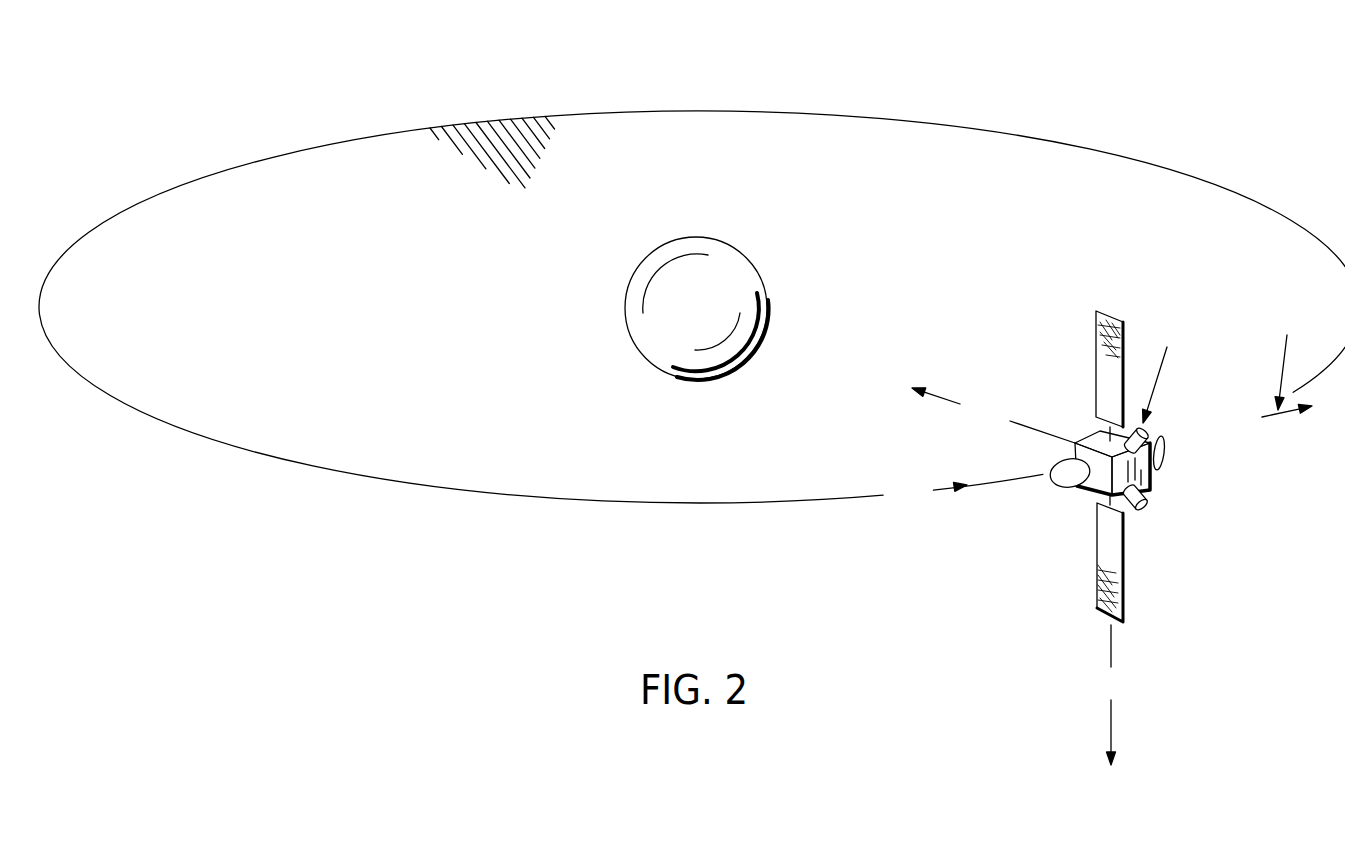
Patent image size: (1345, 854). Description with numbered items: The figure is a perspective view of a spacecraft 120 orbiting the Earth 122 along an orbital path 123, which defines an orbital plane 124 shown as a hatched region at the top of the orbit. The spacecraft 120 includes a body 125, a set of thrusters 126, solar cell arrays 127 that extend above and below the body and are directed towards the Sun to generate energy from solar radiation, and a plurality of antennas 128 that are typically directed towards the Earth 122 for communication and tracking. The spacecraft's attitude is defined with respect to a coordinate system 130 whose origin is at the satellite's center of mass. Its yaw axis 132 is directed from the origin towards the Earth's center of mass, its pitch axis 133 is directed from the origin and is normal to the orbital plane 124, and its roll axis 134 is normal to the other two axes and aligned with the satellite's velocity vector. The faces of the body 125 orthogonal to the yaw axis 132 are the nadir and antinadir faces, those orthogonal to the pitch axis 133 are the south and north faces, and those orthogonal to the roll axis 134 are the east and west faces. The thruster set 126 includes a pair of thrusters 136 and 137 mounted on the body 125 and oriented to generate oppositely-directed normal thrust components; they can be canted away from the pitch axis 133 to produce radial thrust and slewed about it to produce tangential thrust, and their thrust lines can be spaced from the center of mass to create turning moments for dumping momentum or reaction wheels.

The spacecraft 120 is at (1050, 538).
The Earth 122 is at (672, 240).
The orbital path 123 is at (692, 310).
The orbital plane 124 is at (503, 140).
The body 125 is at (1150, 466).
The set of thrusters 126 is at (1168, 372).
The solar cell arrays 127 is at (1102, 342).
The antennas 128 is at (1052, 462).
The coordinate system 130 is at (1293, 357).
The yaw axis 132 is at (993, 415).
The pitch axis 133 is at (1115, 695).
The roll axis 134 is at (1163, 443).
The thruster 136 is at (1147, 430).
The thruster 137 is at (1146, 502).